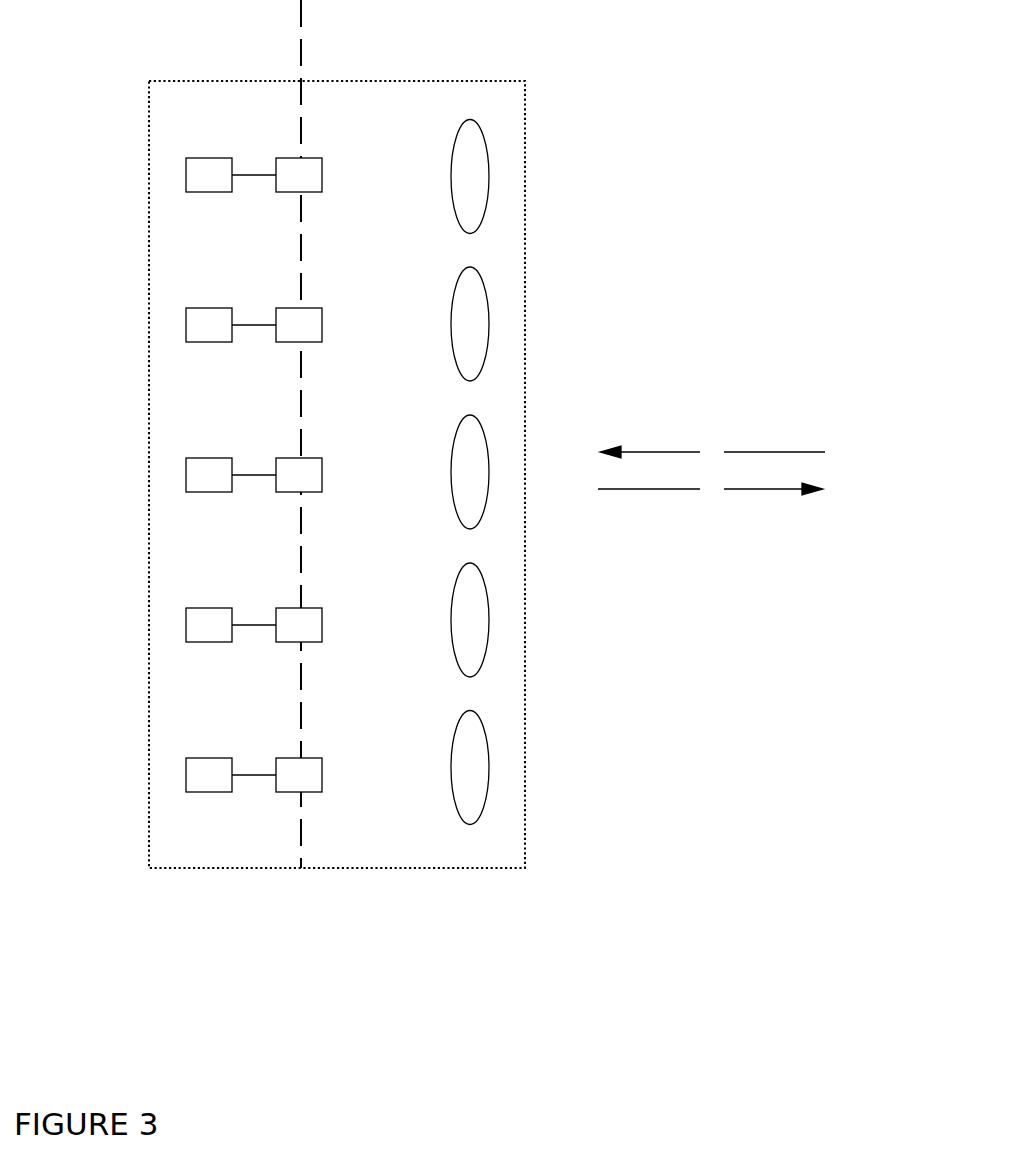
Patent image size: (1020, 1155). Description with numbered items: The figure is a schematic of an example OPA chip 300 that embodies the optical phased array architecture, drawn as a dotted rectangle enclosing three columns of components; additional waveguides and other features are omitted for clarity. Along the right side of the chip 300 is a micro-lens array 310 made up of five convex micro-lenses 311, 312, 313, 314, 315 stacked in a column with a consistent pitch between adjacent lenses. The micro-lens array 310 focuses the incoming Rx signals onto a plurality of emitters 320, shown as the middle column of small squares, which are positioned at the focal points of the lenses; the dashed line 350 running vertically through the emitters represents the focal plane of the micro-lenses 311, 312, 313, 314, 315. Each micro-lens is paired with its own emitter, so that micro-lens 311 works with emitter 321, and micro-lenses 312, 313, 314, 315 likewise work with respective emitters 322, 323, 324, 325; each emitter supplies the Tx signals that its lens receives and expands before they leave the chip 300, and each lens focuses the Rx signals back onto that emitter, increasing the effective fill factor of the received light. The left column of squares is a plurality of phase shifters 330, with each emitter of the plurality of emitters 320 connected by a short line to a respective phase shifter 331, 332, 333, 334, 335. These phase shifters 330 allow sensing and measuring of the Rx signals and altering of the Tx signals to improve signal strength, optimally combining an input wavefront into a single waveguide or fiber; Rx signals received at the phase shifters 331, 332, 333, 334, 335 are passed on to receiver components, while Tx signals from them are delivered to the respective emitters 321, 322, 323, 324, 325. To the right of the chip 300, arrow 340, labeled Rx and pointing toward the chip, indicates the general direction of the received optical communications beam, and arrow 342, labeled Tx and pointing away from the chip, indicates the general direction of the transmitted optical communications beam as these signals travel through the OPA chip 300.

The OPA chip 300 is at (149, 108).
The micro-lens array 310 is at (518, 544).
The micro-lens 311 is at (489, 162).
The micro-lens 312 is at (489, 310).
The micro-lens 313 is at (489, 458).
The micro-lens 314 is at (489, 606).
The micro-lens 315 is at (489, 754).
The plurality of emitters 320 is at (346, 561).
The emitter 321 is at (322, 178).
The emitter 322 is at (322, 328).
The emitter 323 is at (322, 478).
The emitter 324 is at (322, 628).
The emitter 325 is at (348, 775).
The plurality of phase shifters 330 is at (162, 561).
The phase shifter 331 is at (186, 172).
The phase shifter 332 is at (186, 322).
The phase shifter 333 is at (186, 472).
The phase shifter 334 is at (186, 622).
The phase shifter 335 is at (186, 772).
The arrow 340 is at (825, 452).
The arrow 342 is at (823, 489).
The dashed line 350 is at (301, 30).